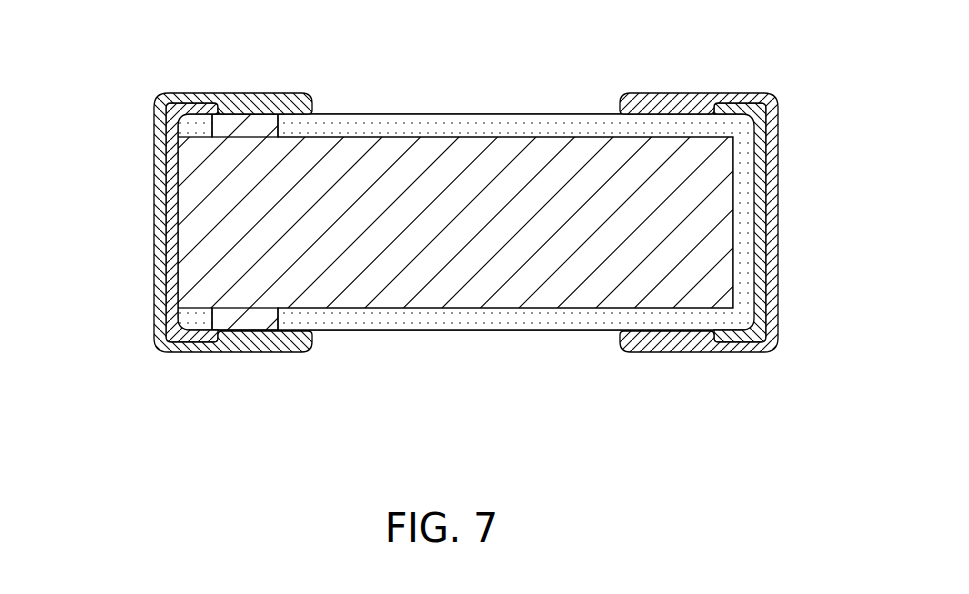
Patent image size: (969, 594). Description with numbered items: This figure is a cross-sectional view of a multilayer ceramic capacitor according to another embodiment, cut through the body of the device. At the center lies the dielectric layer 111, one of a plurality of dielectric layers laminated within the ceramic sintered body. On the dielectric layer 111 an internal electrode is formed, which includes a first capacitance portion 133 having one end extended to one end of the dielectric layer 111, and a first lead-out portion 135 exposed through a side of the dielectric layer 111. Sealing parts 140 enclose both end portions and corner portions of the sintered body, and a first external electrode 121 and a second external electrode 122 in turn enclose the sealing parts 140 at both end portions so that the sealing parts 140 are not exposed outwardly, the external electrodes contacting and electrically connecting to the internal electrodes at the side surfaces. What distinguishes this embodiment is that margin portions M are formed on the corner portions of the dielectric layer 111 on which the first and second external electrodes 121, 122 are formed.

The dielectric layer 111 is at (515, 320).
The first external electrode 121 is at (158, 218).
The second external electrode 122 is at (773, 218).
The first capacitance portion 133 is at (413, 260).
The first lead-out portion 135 is at (248, 320).
The sealing part 140 is at (172, 183).
The margin portion M is at (195, 123).